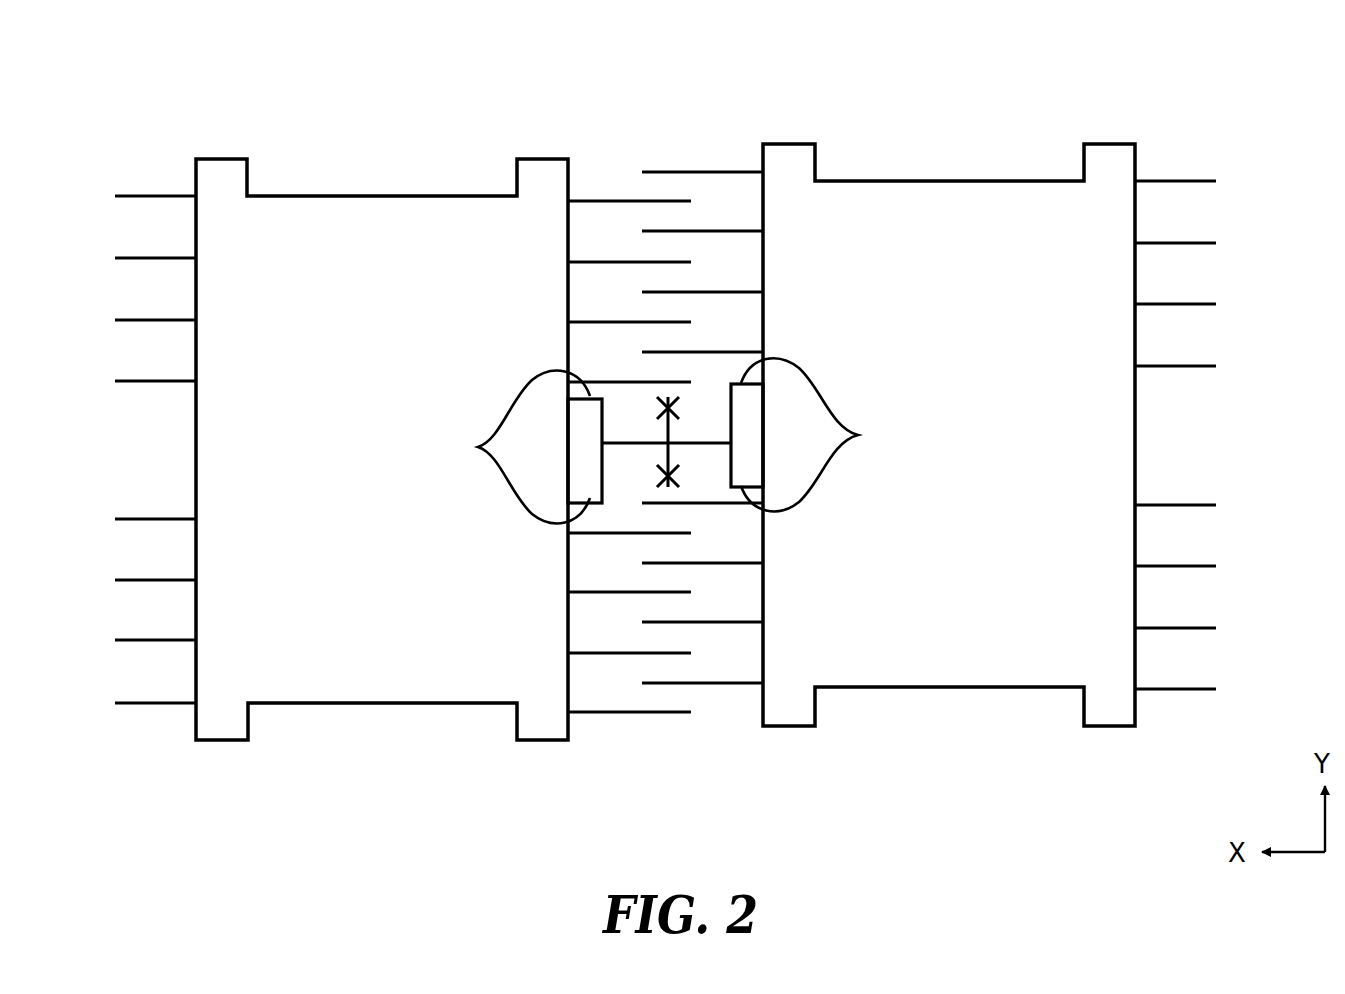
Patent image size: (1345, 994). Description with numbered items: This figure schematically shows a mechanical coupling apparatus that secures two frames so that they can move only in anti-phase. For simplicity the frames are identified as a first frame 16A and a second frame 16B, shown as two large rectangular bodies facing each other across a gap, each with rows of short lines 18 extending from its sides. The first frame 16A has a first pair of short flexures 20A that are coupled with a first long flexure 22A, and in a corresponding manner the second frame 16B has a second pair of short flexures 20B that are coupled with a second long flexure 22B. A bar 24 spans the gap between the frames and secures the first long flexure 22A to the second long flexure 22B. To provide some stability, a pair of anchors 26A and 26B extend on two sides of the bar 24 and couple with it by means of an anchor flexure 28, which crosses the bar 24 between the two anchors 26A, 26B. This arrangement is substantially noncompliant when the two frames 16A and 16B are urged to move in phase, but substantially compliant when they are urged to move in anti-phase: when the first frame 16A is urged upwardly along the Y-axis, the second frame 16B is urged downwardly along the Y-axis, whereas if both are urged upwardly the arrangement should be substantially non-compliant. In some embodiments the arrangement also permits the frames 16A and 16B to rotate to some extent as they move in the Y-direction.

The first frame 16A is at (376, 736).
The second frame 16B is at (943, 736).
The interconnect lines 18 is at (153, 714).
The first pair of short flexures 20A is at (503, 447).
The second pair of short flexures 20B is at (830, 434).
The first long flexure 22A is at (603, 430).
The second long flexure 22B is at (716, 414).
The bar 24 is at (632, 450).
The anchor 26A is at (663, 396).
The anchor 26B is at (679, 479).
The anchor flexure 28 is at (676, 430).